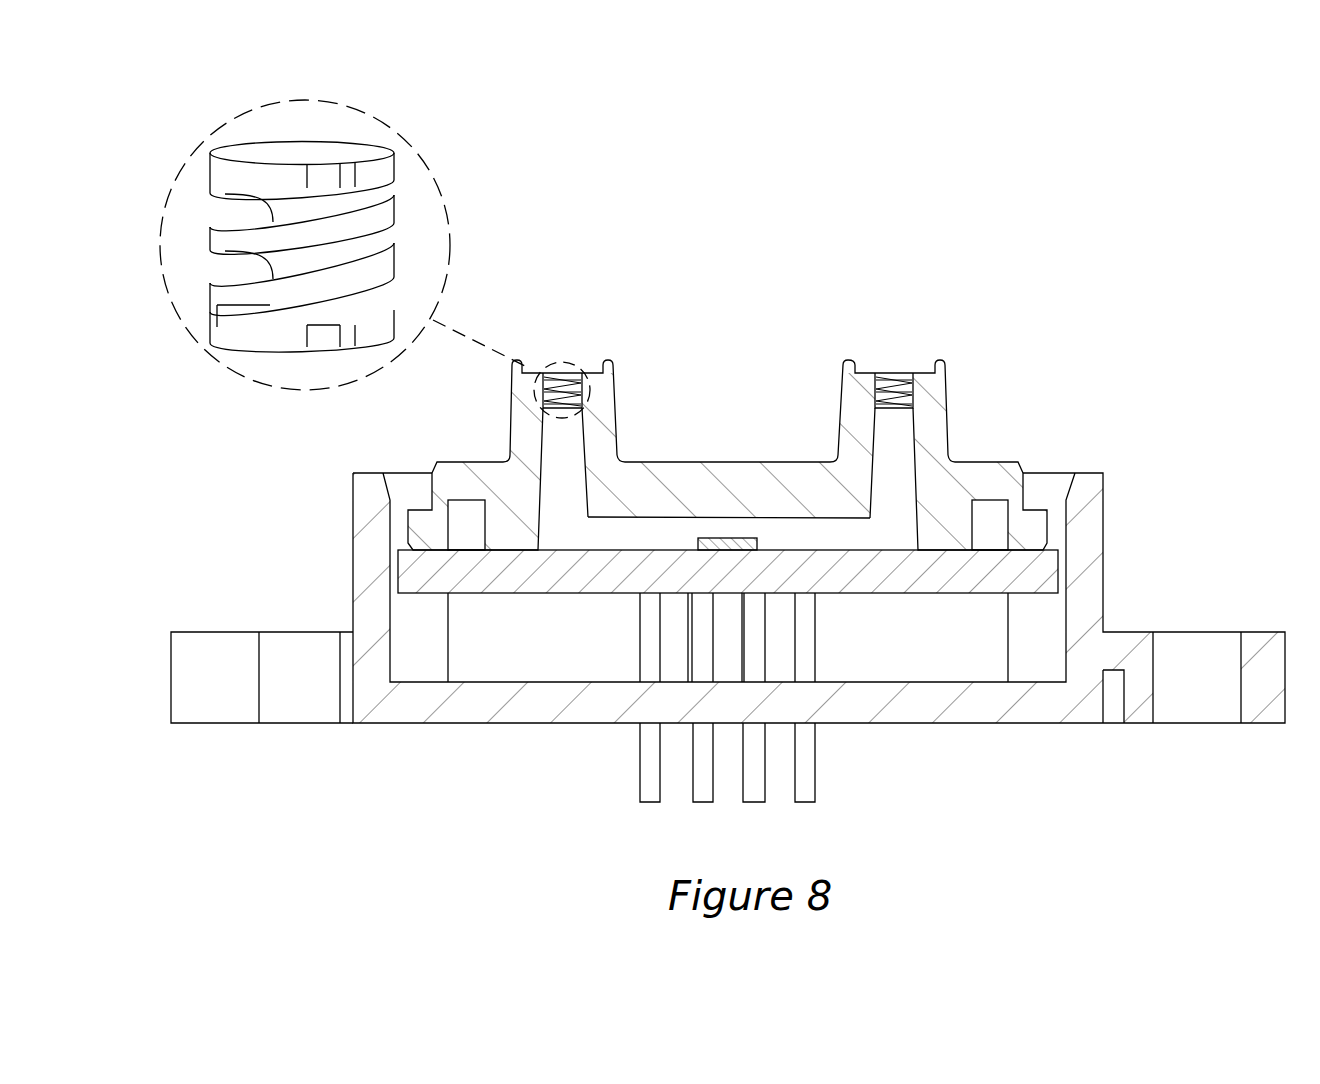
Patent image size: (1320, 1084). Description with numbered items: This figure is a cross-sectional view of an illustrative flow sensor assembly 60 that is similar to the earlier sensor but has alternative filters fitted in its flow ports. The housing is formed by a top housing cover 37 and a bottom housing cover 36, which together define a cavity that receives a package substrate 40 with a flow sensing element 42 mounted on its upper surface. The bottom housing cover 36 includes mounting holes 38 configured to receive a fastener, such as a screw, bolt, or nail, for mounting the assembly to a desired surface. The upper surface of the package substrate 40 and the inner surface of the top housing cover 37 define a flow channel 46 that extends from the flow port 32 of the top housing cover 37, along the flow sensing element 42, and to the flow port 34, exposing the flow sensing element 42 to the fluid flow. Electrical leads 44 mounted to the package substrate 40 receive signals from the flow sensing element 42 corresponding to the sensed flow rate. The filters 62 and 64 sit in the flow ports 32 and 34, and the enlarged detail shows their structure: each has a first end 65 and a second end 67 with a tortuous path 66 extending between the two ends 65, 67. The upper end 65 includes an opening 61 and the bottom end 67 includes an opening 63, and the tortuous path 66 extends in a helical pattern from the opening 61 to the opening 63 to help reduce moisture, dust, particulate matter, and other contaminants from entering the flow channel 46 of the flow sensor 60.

The flow sensor assembly 60 is at (1102, 278).
The flow port 32 is at (610, 400).
The flow port 34 is at (940, 400).
The bottom housing cover 36 is at (1093, 543).
The top housing cover 37 is at (722, 468).
The mounting holes 38 is at (293, 642).
The package substrate 40 is at (983, 568).
The flow sensing element 42 is at (710, 543).
The electrical leads 44 is at (752, 787).
The flow channel 46 is at (832, 535).
The opening 61 is at (332, 160).
The filter 62 is at (562, 380).
The opening 63 is at (332, 350).
The filter 64 is at (893, 380).
The first end 65 is at (253, 153).
The tortuous path 66 is at (372, 250).
The second end 67 is at (255, 352).